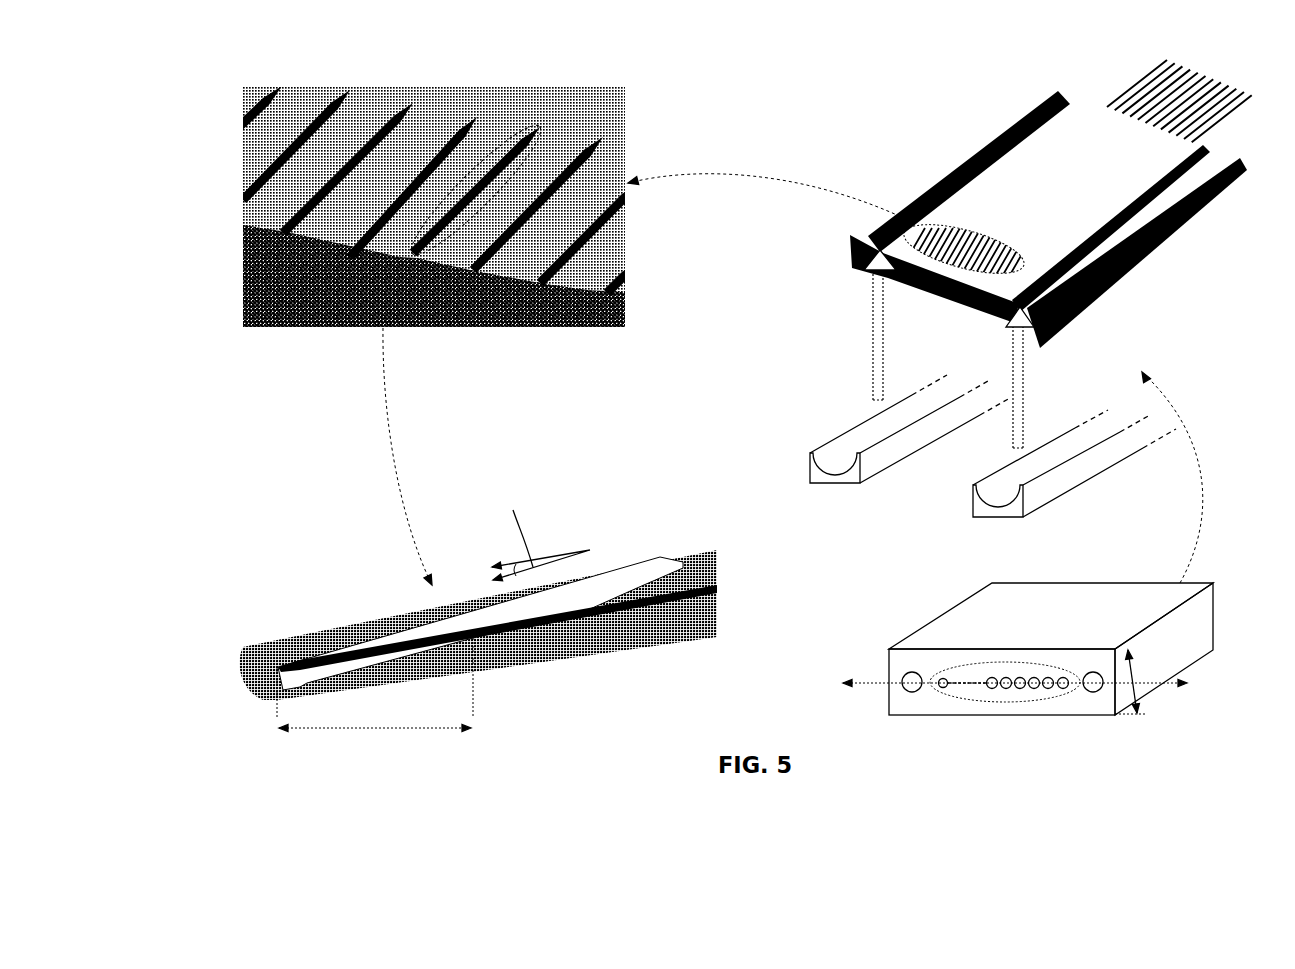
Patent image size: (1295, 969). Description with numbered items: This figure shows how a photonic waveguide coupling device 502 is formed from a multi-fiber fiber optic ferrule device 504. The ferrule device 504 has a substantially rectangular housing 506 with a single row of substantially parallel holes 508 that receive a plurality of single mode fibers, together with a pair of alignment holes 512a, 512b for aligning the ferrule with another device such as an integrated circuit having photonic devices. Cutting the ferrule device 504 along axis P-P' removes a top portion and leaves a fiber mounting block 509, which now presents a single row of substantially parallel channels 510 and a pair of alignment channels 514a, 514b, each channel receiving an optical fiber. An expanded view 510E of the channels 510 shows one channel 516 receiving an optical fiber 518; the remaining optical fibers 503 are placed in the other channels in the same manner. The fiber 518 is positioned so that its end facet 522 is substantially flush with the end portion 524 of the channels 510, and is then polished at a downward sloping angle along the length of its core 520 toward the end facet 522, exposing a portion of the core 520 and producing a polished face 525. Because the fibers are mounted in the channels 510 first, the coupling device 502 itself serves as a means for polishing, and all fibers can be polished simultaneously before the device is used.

The photonic waveguide coupling device 502 is at (1051, 246).
The optical fibers 503 is at (1142, 80).
The multi-fiber fiber optic ferrule device 504 is at (1020, 675).
The substantially rectangular housing 506 is at (1063, 625).
The single row of substantially parallel holes 508 is at (1032, 702).
The fiber mounting block 509 is at (1093, 176).
The single row of substantially parallel channels 510 is at (983, 237).
The expanded view of the single row of substantially parallel channels 510E is at (630, 102).
The alignment hole 512a is at (910, 692).
The alignment hole 512b is at (1092, 692).
The alignment channel 514a is at (835, 463).
The alignment channel 514b is at (995, 495).
The channel 516 is at (460, 223).
The optical fiber 518 is at (470, 613).
The core 520 is at (660, 603).
The end facet 522 is at (250, 673).
The end portion 524 is at (287, 260).
The polished face 525 is at (507, 620).